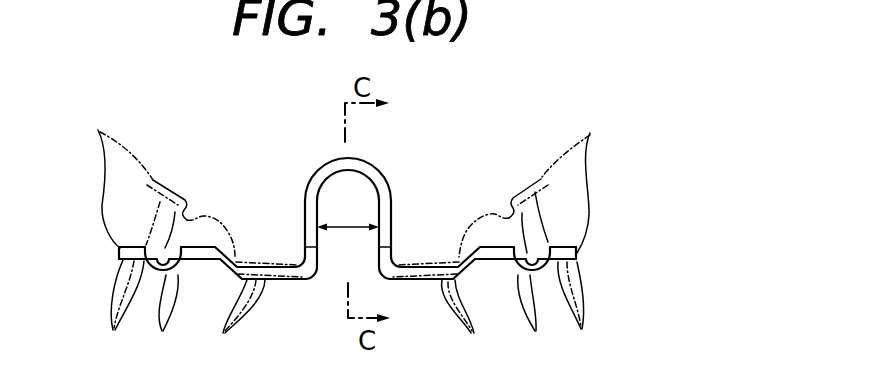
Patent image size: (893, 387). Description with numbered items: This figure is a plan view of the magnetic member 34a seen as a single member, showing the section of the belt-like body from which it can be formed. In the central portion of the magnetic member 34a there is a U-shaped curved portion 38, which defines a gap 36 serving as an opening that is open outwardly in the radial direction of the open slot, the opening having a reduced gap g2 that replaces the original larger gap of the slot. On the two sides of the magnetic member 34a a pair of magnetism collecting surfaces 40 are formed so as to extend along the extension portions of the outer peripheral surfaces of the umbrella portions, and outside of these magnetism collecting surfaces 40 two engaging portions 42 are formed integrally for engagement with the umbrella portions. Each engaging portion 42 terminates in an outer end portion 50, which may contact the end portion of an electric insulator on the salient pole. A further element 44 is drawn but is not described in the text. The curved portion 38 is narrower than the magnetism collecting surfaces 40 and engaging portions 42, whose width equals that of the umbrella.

The magnetic member 34a is at (430, 160).
The gap 36 is at (362, 261).
The U-shaped curved portion 38 is at (306, 192).
The magnetism collecting surfaces 40 is at (347, 324).
The engaging portions 42 is at (344, 314).
The projection 44 is at (346, 320).
The outer end portion 50 is at (345, 188).
The reduced gap g2 is at (343, 229).